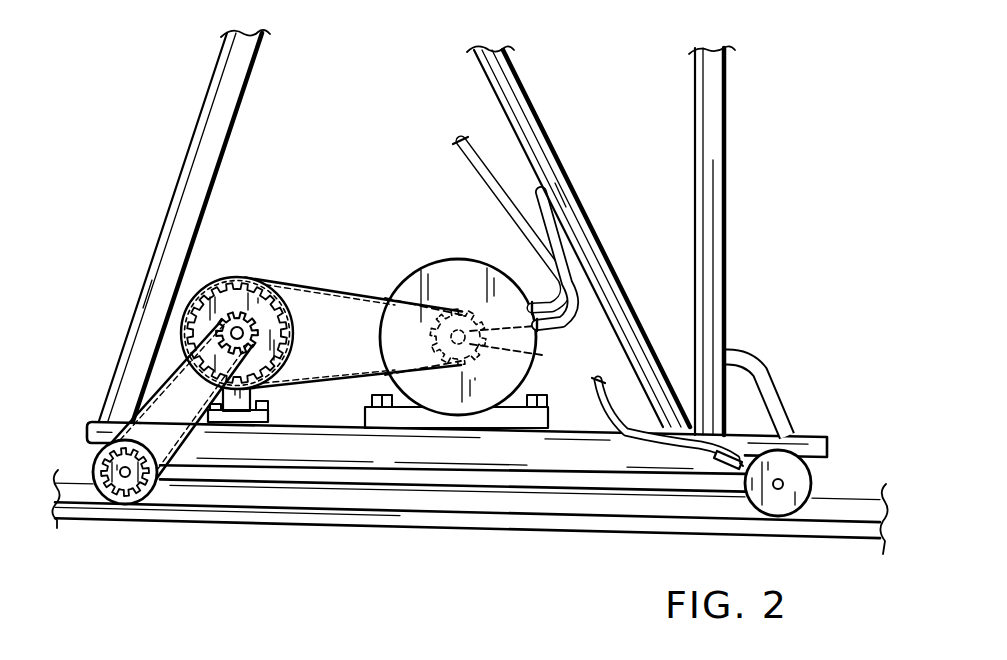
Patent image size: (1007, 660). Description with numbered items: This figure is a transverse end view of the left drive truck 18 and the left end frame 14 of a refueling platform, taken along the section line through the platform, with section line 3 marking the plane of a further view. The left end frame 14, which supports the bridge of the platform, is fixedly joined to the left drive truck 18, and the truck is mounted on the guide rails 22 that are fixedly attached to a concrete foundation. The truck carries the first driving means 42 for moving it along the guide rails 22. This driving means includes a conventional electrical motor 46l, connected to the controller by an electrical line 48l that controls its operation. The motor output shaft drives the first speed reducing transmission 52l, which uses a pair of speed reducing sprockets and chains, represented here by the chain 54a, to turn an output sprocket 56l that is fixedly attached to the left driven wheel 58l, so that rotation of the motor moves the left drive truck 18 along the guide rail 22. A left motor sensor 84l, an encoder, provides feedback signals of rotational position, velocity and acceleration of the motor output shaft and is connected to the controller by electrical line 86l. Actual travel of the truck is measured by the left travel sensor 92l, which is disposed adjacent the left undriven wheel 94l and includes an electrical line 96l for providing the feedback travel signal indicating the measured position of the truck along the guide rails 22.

The left end frame 14 is at (734, 142).
The left drive truck 18 is at (808, 428).
The guide rails 22 is at (841, 497).
The section line 3- 3 is at (135, 236).
The first driving means 42 is at (373, 268).
The electrical motor 46l is at (437, 262).
The electrical line 48l is at (482, 73).
The first speed reducing transmission 52l is at (254, 263).
The drive chain 54a is at (383, 329).
The output sprocket 56l is at (146, 505).
The left driven wheel 58l is at (93, 462).
The left motor sensor 84l is at (536, 355).
The electrical line 86l is at (463, 152).
The left travel sensor 92l is at (742, 466).
The left undriven wheel 94l is at (811, 478).
The electrical line 96l is at (617, 438).